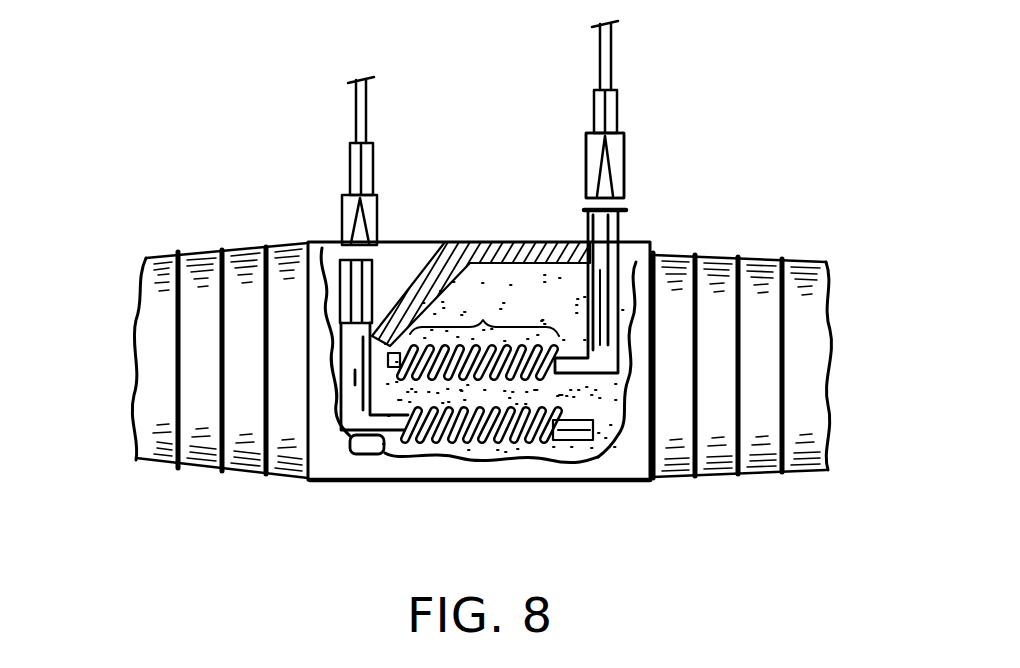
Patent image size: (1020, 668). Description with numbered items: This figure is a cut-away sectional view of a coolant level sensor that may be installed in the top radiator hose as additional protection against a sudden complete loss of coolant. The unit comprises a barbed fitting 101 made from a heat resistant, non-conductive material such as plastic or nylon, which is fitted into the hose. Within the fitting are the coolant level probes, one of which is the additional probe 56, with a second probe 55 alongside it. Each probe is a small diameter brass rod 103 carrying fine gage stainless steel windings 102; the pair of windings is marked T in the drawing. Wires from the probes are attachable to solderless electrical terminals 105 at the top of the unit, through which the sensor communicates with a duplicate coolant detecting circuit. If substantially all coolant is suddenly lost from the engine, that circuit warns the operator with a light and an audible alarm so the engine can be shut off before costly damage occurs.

The electrical connector 55 is at (660, 121).
The probe 56 is at (312, 141).
The barbed fitting 101 is at (218, 252).
The stainless steel windings 102 is at (520, 338).
The brass rods 103 is at (630, 262).
The solderless electrical terminals 105 is at (377, 203).
The heating element pair T is at (484, 312).